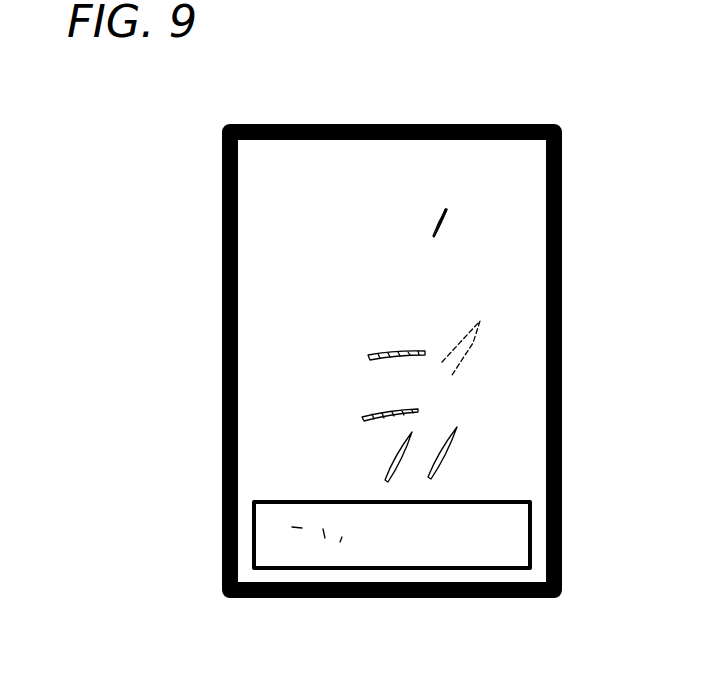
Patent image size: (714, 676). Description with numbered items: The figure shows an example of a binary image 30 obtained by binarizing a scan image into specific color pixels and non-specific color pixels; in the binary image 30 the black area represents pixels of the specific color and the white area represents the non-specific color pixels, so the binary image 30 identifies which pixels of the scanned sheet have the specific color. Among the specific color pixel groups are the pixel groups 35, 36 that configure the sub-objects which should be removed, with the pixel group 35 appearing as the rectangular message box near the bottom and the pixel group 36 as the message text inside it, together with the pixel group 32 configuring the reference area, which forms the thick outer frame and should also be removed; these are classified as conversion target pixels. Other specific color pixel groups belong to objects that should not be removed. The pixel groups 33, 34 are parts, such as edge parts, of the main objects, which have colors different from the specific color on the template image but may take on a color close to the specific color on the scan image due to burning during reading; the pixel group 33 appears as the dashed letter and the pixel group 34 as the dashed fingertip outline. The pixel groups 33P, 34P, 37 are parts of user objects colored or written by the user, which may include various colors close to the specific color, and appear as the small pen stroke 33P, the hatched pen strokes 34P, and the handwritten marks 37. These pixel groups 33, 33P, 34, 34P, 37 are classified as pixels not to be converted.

The binary image 30 is at (457, 83).
The pixel group configuring the reference area 32 is at (535, 125).
The pixel group configuring the user object 33P is at (448, 210).
The pixel group configuring the main object 33 is at (498, 238).
The pixel group configuring the main object 34 is at (472, 344).
The pixel group configuring the user object 34P is at (388, 465).
The pixel group configuring the sub-object 35 is at (515, 500).
The pixel group configuring the sub-object 36 is at (365, 517).
The pixel group configuring the user object 37 is at (297, 528).